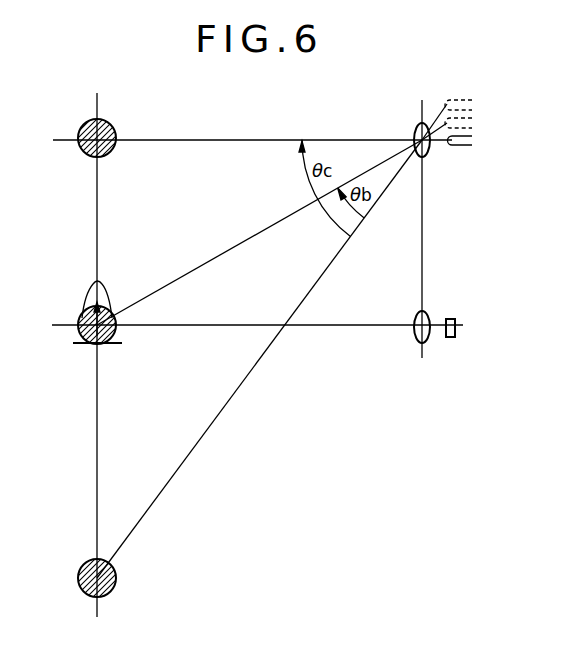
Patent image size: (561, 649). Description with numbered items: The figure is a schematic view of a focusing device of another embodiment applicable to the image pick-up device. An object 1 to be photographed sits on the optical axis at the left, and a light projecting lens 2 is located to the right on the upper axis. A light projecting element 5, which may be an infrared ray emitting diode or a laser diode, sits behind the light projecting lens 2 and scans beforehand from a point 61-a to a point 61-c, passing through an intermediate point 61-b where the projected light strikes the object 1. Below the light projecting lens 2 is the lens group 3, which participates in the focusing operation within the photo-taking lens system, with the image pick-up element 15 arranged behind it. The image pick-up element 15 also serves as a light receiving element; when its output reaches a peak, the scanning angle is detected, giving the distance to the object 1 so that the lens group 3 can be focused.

The object to be photographed 1 is at (87, 300).
The light projecting lens 2 is at (414, 128).
The lens group 3 is at (410, 345).
The light projecting element 5 is at (458, 148).
The image pick-up element 15 is at (452, 338).
The point 61-a is at (115, 581).
The point 61-b is at (115, 328).
The point 61-c is at (111, 151).